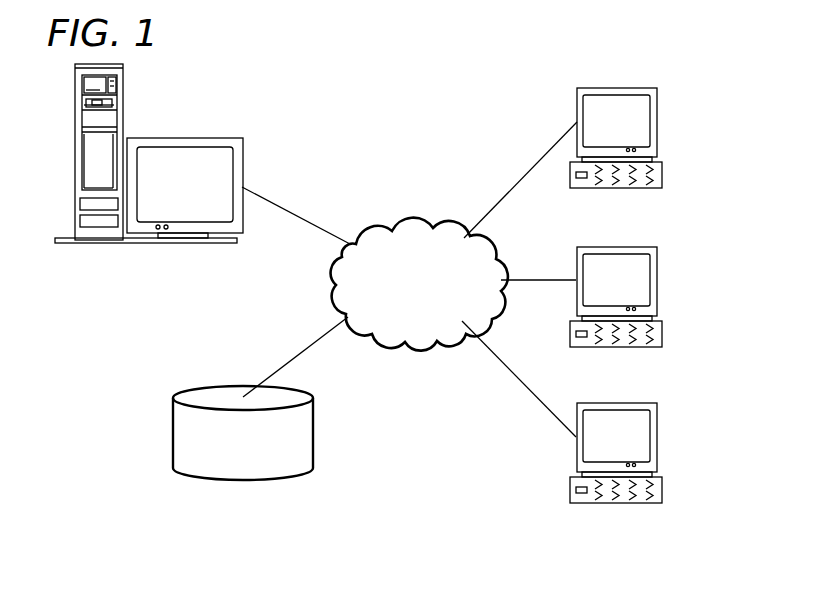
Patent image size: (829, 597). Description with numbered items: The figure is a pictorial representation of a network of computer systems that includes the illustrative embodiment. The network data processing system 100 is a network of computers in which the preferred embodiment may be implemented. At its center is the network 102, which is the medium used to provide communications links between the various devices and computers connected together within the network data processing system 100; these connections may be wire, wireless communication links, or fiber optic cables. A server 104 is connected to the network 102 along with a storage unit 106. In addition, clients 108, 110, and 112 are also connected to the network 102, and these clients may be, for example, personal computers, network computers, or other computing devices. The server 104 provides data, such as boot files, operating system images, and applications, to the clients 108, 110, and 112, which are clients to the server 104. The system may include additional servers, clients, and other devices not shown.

The network data processing system 100 is at (469, 104).
The network 102 is at (387, 227).
The server 104 is at (75, 153).
The storage unit 106 is at (222, 480).
The client 108 is at (657, 122).
The client 110 is at (657, 280).
The client 112 is at (657, 437).